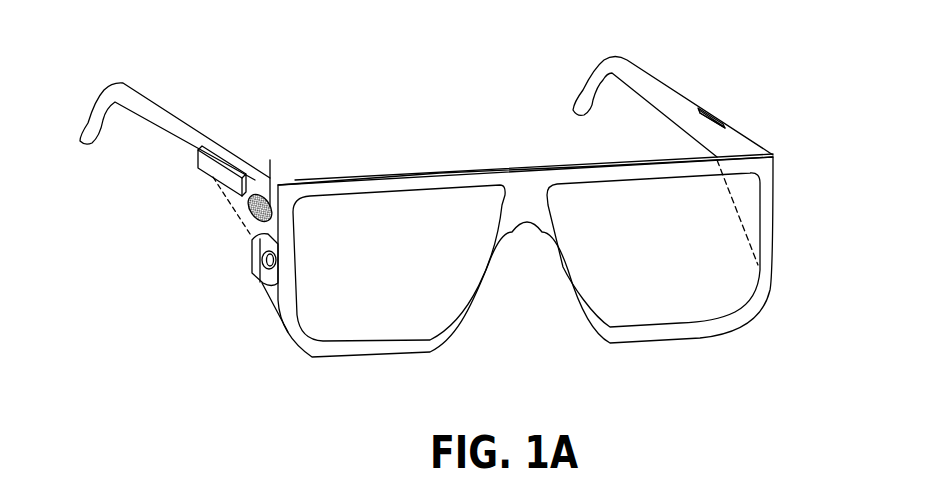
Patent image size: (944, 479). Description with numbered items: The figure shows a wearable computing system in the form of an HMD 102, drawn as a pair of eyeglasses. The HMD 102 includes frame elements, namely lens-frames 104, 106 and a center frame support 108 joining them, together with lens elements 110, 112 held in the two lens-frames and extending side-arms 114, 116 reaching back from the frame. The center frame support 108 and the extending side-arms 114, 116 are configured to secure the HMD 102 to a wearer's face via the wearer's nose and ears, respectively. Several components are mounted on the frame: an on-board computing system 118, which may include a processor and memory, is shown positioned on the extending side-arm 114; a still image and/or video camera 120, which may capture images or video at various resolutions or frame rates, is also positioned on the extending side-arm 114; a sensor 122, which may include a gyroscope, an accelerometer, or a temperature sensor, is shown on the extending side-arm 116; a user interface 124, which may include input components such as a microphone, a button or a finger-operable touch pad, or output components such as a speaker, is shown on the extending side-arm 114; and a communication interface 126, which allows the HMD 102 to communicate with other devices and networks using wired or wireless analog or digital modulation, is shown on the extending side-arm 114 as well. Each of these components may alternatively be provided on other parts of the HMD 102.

The HMD 102 is at (381, 90).
The lens-frame 104 is at (395, 183).
The lens-frame 106 is at (597, 168).
The center frame support 108 is at (528, 190).
The lens element 110 is at (345, 322).
The lens element 112 is at (672, 310).
The extending side-arm 114 is at (185, 128).
The extending side-arm 116 is at (677, 93).
The on-board computing system 118 is at (213, 170).
The camera 120 is at (253, 253).
The sensor 122 is at (718, 113).
The user interface 124 is at (252, 210).
The communication interface 126 is at (266, 158).